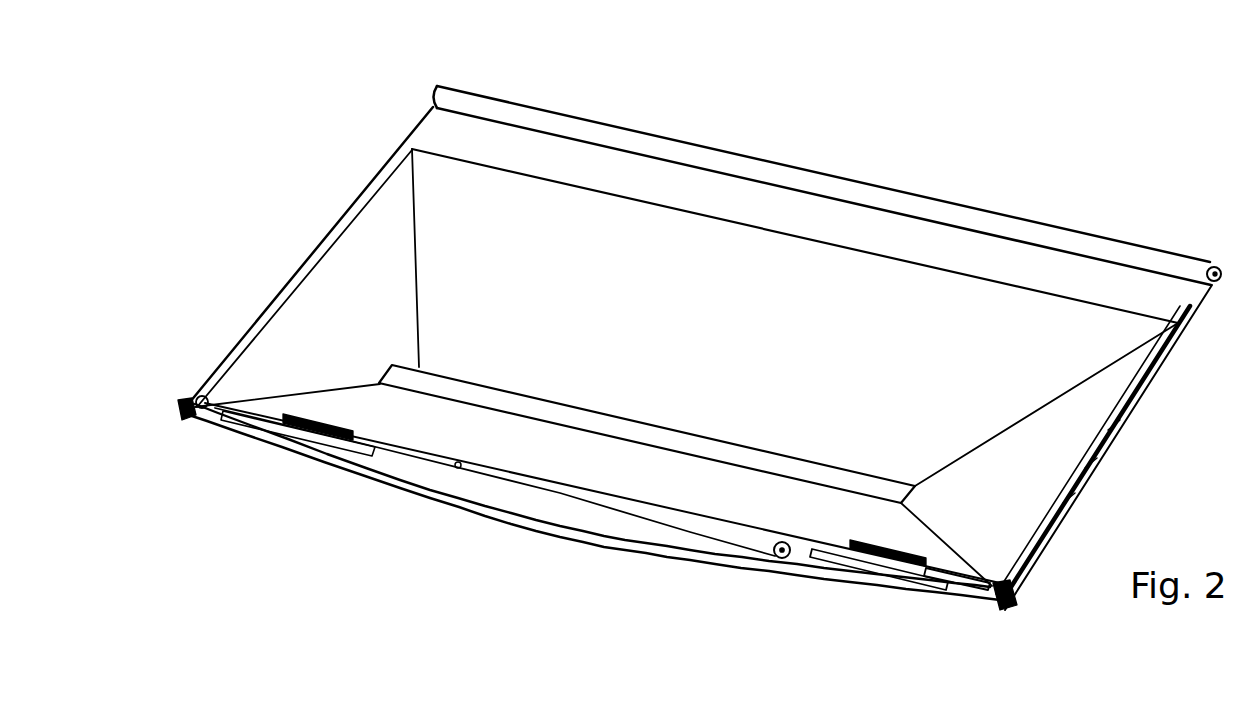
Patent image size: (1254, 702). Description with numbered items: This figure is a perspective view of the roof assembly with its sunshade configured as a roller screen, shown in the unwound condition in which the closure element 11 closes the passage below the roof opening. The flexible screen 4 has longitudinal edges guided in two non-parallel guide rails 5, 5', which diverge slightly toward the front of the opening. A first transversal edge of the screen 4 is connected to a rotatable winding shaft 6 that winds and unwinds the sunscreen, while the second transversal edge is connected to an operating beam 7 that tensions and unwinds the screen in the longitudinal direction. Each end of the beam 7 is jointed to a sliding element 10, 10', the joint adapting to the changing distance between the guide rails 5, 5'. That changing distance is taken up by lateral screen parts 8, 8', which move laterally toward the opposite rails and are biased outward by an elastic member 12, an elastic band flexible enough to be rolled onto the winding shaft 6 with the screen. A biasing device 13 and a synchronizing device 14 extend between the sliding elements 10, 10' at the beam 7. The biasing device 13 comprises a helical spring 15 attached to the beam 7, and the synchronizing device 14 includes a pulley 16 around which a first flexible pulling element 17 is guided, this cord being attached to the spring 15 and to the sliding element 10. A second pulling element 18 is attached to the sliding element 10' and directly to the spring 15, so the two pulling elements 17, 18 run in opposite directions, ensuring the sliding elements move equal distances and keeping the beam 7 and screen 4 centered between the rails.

The flexible screen 4 is at (645, 230).
The guide rail 5 is at (1088, 450).
The guide rail 5' is at (271, 314).
The winding shaft 6 is at (436, 94).
The operating beam 7 is at (432, 484).
The lateral screen part 8 is at (1108, 447).
The lateral screen part 8' is at (311, 254).
The sliding element 10 is at (1037, 588).
The sliding element 10' is at (170, 380).
The closure element 11 is at (912, 161).
The elastic member 12 is at (613, 427).
The biasing device 13 is at (814, 586).
The synchronizing device 14 is at (738, 556).
The helical spring 15 is at (880, 580).
The pulley 16 is at (778, 565).
The first flexible pulling element 17 is at (938, 585).
The second pulling element 18 is at (510, 517).